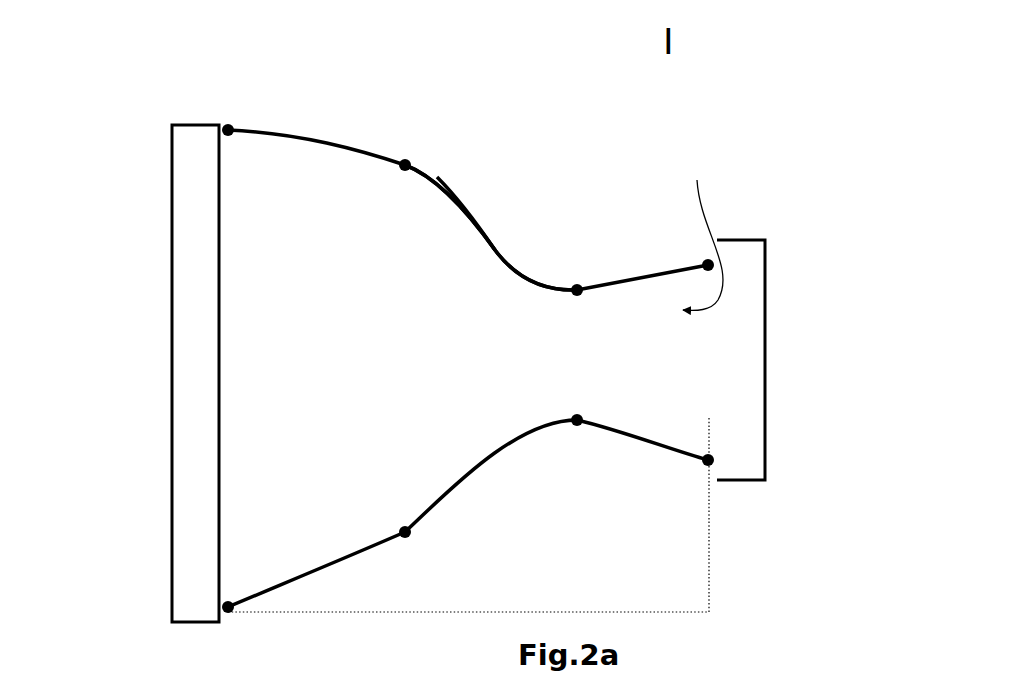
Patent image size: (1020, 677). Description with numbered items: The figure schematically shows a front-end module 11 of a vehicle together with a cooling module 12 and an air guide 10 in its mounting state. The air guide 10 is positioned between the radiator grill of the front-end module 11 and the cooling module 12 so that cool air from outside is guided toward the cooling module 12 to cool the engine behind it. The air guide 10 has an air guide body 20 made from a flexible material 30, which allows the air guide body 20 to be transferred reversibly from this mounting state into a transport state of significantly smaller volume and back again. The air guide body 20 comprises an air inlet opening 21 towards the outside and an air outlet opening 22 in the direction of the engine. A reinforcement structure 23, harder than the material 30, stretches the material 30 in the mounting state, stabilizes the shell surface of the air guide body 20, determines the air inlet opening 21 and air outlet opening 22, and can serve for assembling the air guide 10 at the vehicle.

The air guide 10 is at (351, 128).
The front-end module 11 is at (765, 406).
The cooling module 12 is at (185, 580).
The air guide body 20 is at (490, 240).
The air inlet opening 21 is at (702, 229).
The air outlet opening 22 is at (252, 188).
The reinforcement structure 23 is at (228, 127).
The material 30 is at (453, 201).